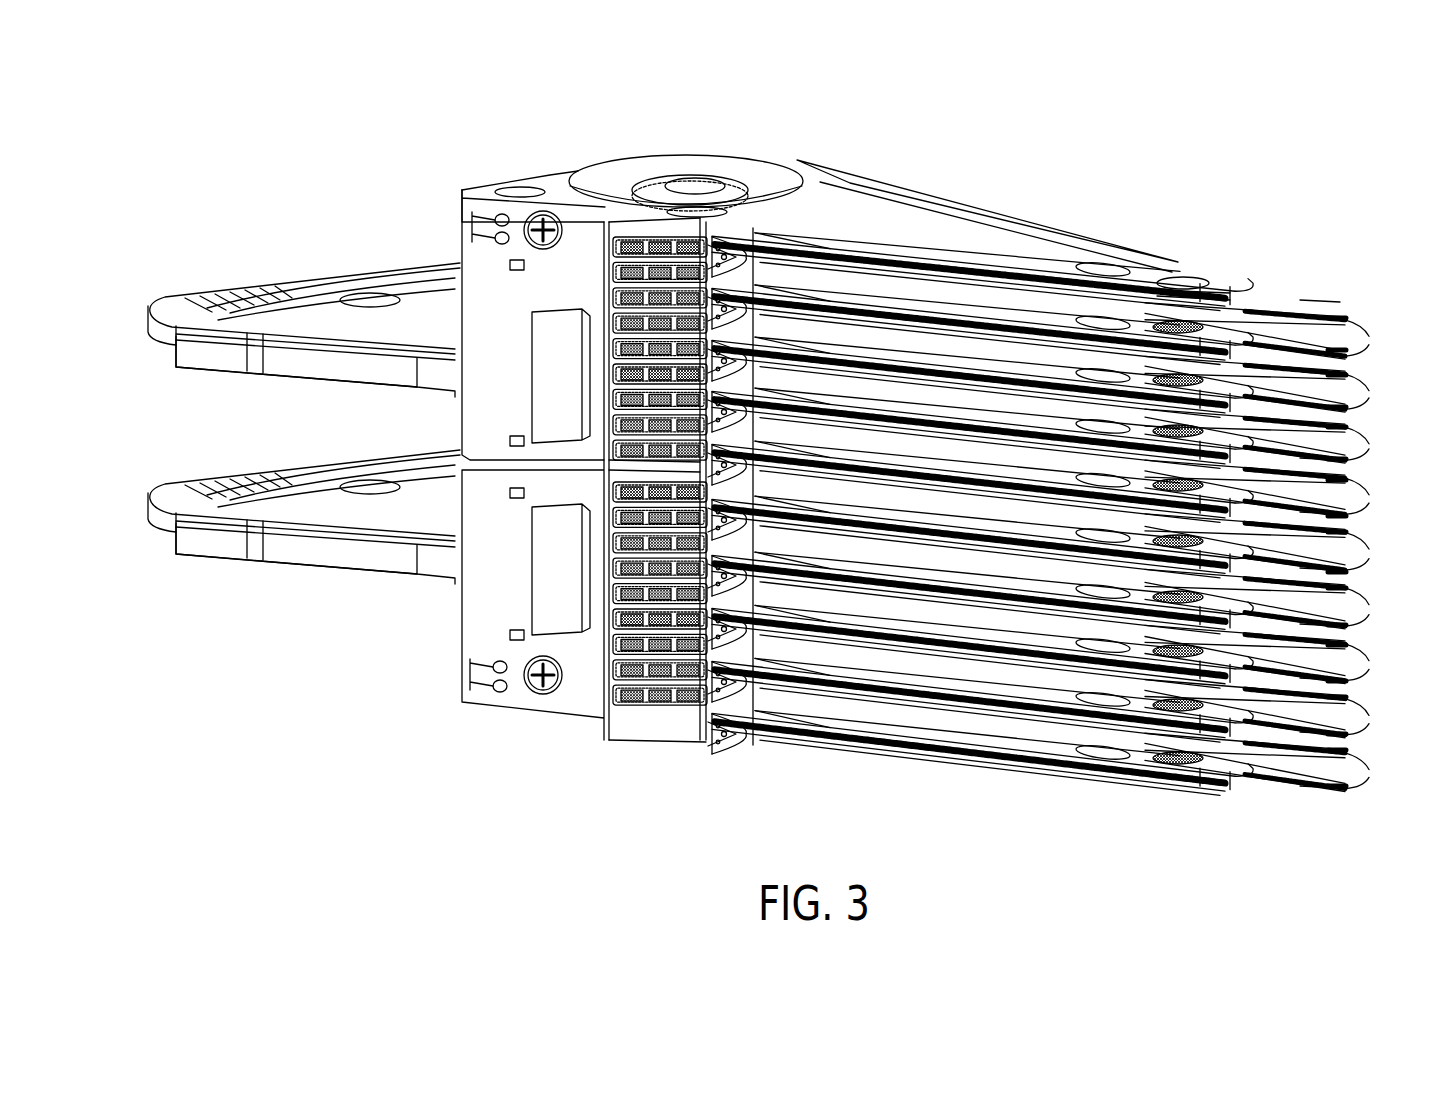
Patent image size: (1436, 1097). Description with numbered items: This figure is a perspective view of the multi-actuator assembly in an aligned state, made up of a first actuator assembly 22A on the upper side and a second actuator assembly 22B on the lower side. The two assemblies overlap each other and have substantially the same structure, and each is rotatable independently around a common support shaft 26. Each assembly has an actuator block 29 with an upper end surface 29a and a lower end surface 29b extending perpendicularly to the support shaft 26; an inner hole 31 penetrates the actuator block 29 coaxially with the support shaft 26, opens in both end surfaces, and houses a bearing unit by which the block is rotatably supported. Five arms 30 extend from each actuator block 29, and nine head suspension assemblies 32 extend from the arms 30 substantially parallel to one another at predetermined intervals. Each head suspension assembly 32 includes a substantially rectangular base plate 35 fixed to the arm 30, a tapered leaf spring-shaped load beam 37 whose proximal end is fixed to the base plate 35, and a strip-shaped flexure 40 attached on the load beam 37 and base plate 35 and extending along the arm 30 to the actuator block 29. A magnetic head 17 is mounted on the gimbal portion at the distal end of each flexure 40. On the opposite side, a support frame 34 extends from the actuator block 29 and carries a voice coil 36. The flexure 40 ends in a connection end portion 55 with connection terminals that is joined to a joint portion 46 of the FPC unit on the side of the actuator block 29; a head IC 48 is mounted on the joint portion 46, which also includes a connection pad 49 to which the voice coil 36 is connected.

The magnetic head 17 is at (1348, 328).
The first actuator assembly 22A is at (913, 174).
The second actuator assembly 22B is at (722, 750).
The support shaft 26 is at (688, 178).
The actuator block 29 is at (773, 168).
The upper end surface 29a is at (564, 186).
The lower end surface 29b is at (513, 708).
The arm 30 is at (964, 290).
The inner hole 31 is at (710, 178).
The head suspension assembly 32 is at (1285, 290).
The support frame 34 is at (285, 358).
The base plate 35 is at (1211, 284).
The voice coil 36 is at (360, 272).
The load beam 37 is at (1320, 304).
The flexure 40 is at (1243, 385).
The joint portion 46 is at (584, 240).
The head IC 48 is at (545, 345).
The connection pad 49 is at (504, 232).
The connection end portion 55 is at (612, 276).